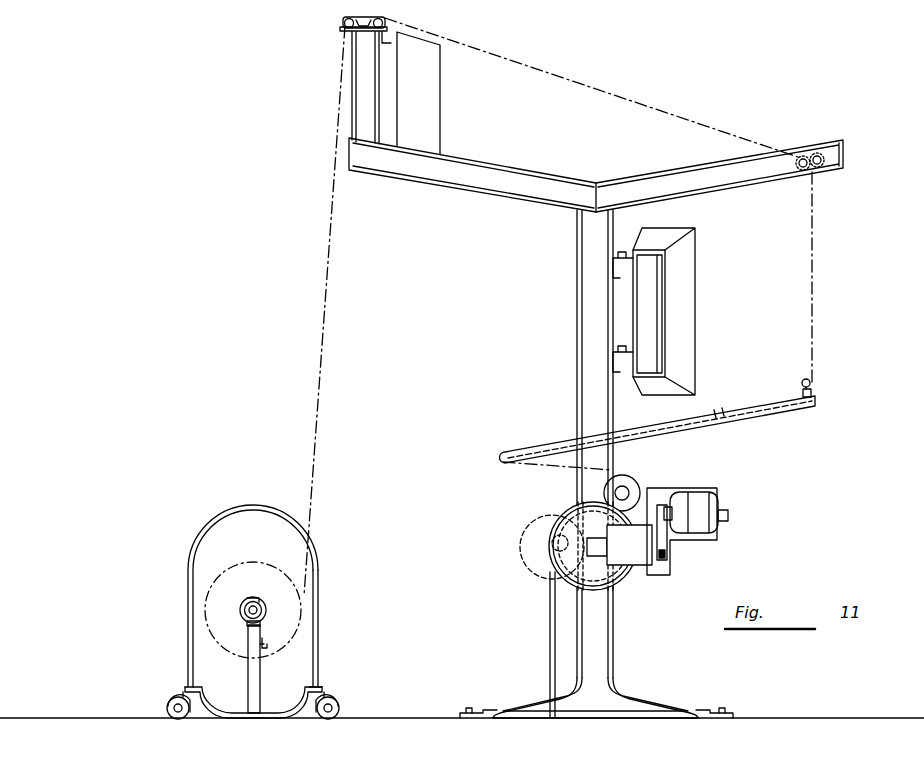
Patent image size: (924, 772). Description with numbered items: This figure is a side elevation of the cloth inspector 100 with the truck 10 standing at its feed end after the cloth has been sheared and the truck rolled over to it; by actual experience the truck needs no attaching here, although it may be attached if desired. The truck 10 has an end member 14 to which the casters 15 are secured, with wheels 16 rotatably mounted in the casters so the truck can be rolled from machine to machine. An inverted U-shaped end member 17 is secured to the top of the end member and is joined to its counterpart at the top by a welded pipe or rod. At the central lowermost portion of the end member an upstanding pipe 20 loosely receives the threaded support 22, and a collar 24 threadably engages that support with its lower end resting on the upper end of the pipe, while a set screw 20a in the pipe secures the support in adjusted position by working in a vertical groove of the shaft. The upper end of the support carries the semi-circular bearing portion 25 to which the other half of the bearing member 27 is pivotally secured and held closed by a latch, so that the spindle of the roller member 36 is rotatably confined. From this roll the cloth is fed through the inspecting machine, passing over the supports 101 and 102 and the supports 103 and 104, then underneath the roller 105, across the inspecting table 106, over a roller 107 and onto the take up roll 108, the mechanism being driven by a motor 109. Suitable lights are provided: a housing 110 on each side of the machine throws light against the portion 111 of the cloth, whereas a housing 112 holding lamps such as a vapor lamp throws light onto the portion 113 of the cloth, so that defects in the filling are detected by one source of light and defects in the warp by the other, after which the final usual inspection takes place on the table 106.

The truck 10 is at (321, 562).
The end member 14 is at (275, 697).
The caster 15 is at (188, 702).
The wheel 16 is at (172, 700).
The inverted U-shaped end member 17 is at (314, 650).
The upstanding pipe 20 is at (247, 670).
The set screw 20a is at (263, 638).
The threaded support 22 is at (253, 624).
The collar 24 is at (264, 607).
The semi-circular bearing portion 25 is at (250, 618).
The bearing member 27 is at (245, 607).
The roller member 36 is at (252, 597).
The cloth inspector 100 is at (577, 317).
The support 101 is at (342, 21).
The support 102 is at (399, 75).
The support 103 is at (799, 164).
The support 104 is at (825, 160).
The roller 105 is at (803, 384).
The inspecting table 106 is at (796, 408).
The roller 107 is at (638, 476).
The take up roll 108 is at (530, 556).
The motor 109 is at (720, 492).
The housing 110 is at (688, 330).
The portion of the cloth 111 is at (815, 280).
The housing 112 is at (420, 118).
The portion of the cloth 113 is at (590, 86).